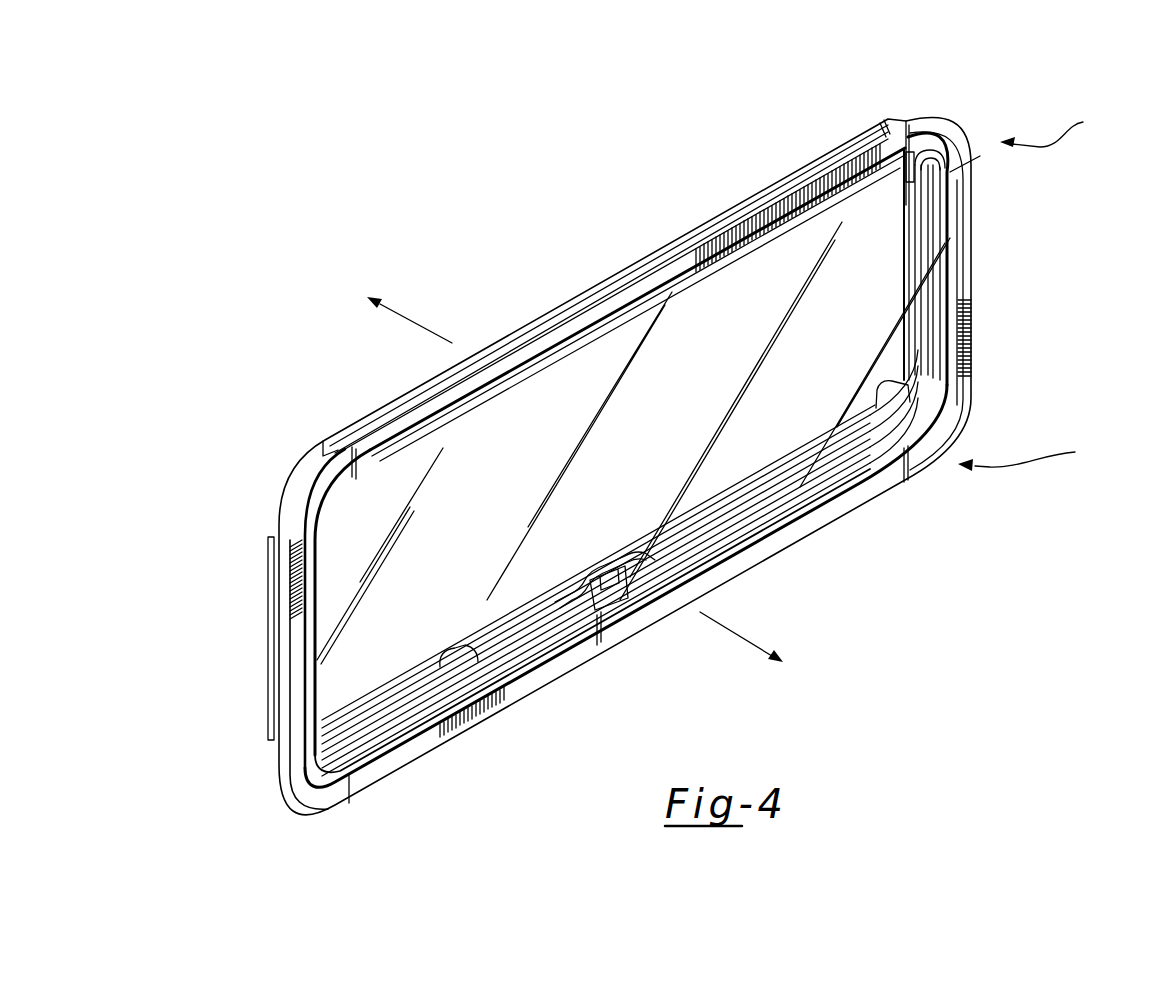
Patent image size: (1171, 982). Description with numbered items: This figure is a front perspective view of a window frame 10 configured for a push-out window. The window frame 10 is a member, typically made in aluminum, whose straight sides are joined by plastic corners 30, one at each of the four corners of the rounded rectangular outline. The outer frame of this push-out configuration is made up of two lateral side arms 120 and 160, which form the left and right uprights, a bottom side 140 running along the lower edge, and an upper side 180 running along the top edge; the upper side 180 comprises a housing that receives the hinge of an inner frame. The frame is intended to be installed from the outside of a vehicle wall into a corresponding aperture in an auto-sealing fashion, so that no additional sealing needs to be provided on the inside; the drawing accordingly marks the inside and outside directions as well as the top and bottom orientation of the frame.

The window frame 10 is at (662, 485).
The plastic corners 30 is at (325, 448).
The lateral side arm 120 is at (297, 657).
The bottom side 140 is at (617, 632).
The lateral side arm 160 is at (963, 300).
The upper side 180 is at (540, 352).